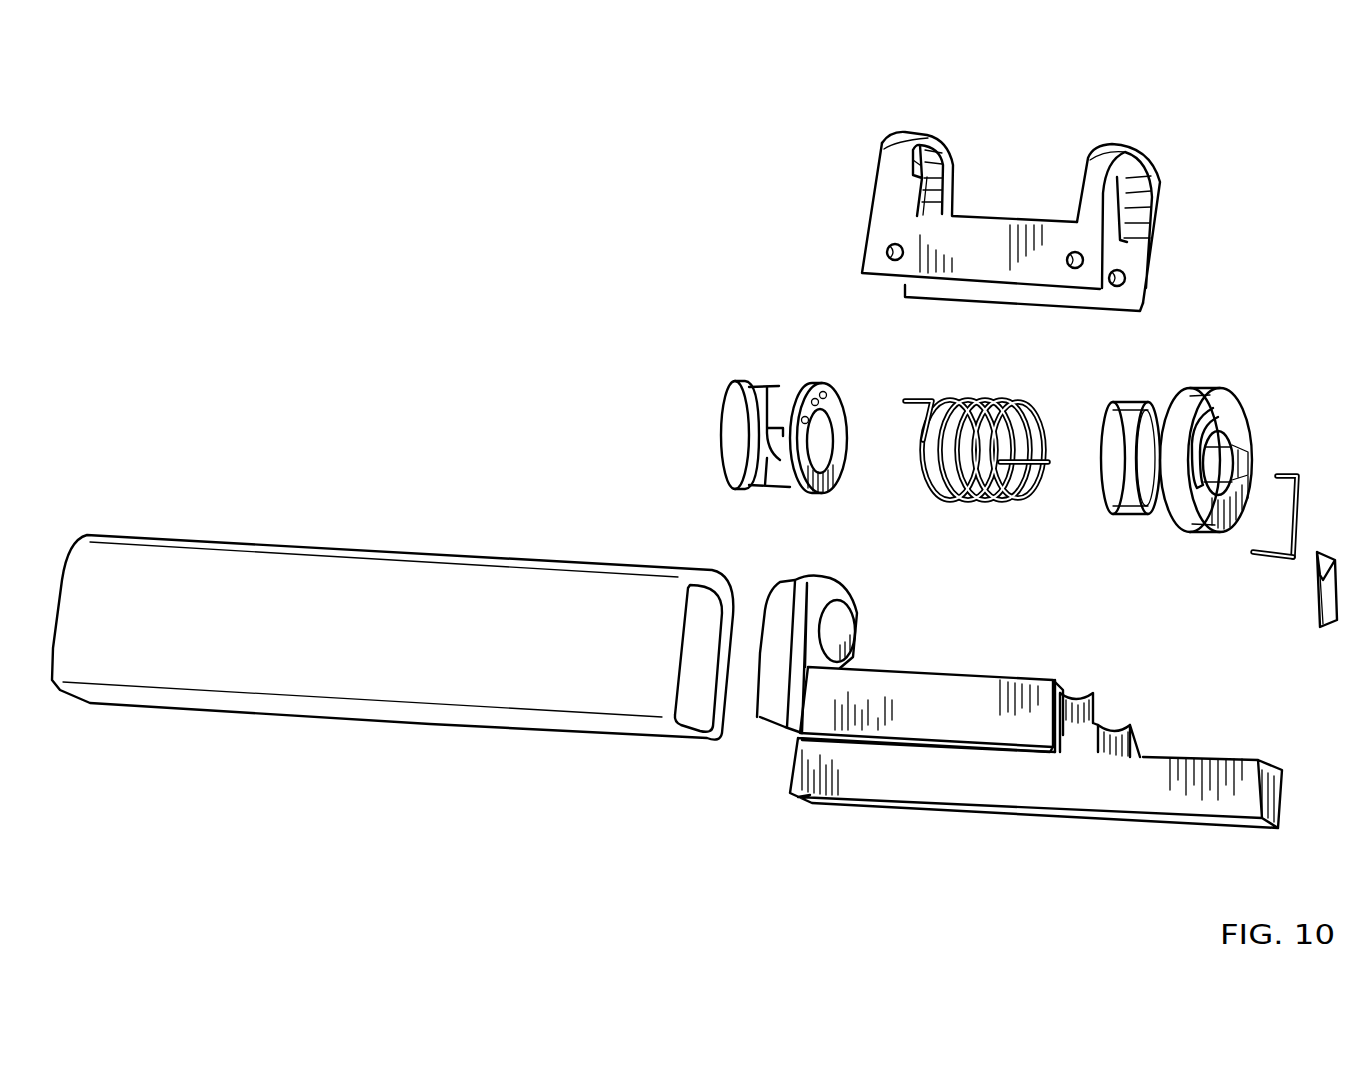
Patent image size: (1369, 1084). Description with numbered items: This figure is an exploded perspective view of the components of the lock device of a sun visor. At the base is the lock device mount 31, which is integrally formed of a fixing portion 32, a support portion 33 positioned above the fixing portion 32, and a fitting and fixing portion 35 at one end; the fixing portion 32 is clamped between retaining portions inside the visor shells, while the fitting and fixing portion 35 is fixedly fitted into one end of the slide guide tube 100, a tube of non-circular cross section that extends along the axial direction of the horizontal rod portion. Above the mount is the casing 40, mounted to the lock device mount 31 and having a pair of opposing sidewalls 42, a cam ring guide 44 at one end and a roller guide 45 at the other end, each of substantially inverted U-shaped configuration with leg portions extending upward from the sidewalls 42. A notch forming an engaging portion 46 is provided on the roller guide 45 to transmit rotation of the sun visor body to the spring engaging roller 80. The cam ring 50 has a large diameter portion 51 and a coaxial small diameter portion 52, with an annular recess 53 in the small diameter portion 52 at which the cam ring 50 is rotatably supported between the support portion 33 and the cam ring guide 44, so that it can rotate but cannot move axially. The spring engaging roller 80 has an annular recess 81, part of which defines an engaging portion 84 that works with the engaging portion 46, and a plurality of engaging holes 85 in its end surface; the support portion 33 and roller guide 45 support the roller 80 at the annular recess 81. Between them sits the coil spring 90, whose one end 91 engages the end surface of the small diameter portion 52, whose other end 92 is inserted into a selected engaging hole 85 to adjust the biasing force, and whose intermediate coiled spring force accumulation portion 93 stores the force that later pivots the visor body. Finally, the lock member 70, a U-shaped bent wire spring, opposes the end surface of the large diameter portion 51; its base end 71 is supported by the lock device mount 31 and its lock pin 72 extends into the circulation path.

The slide guide tube 100 is at (490, 543).
The casing 40 is at (988, 218).
The sidewalls 42 is at (1003, 290).
The cam ring guide 44 is at (1100, 152).
The roller guide 45 is at (903, 135).
The engaging portion 46 is at (920, 167).
The spring engaging roller 80 is at (796, 423).
The annular recess 81 is at (763, 463).
The engaging portion 84 is at (775, 447).
The engaging holes 85 is at (823, 391).
The spring 90 is at (972, 452).
The one end of the spring 91 is at (1030, 470).
The other end of the spring 92 is at (913, 410).
The spring force accumulation portion 93 is at (972, 492).
The cam ring 50 is at (1173, 461).
The large diameter portion 51 is at (1182, 520).
The small diameter portion 52 is at (1120, 496).
The annular recess 53 is at (1150, 425).
The lock member 70 is at (1296, 518).
The base end 71 is at (1268, 555).
The lock pin 72 is at (1285, 468).
The lock device mount 31 is at (964, 821).
The fixing portion 32 is at (1140, 790).
The support portion 33 is at (973, 690).
The fitting and fixing portion 35 is at (770, 698).